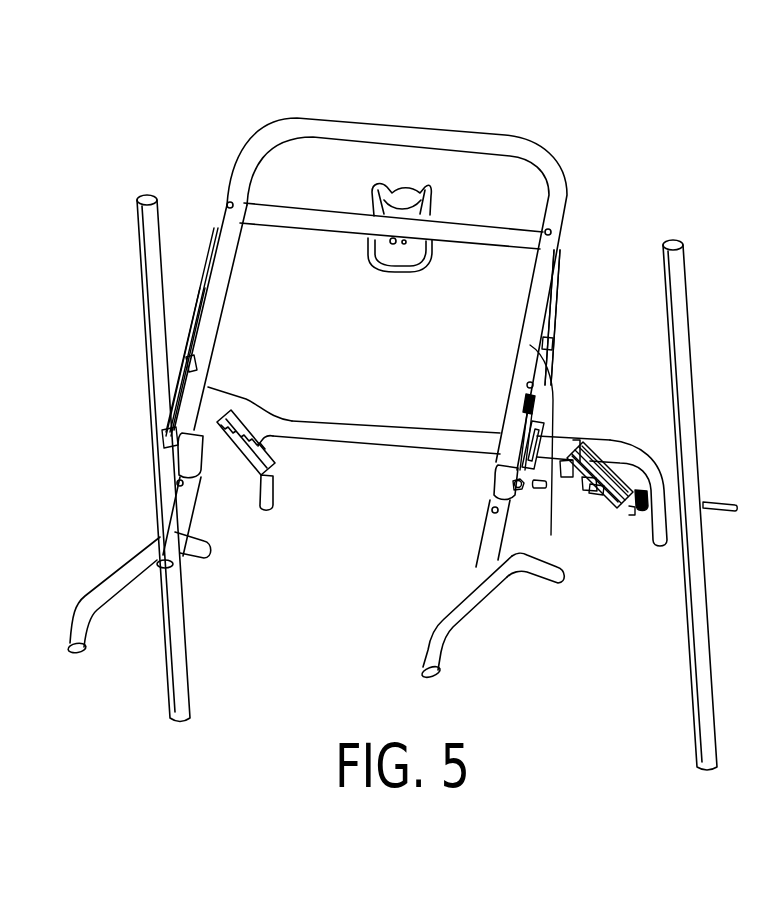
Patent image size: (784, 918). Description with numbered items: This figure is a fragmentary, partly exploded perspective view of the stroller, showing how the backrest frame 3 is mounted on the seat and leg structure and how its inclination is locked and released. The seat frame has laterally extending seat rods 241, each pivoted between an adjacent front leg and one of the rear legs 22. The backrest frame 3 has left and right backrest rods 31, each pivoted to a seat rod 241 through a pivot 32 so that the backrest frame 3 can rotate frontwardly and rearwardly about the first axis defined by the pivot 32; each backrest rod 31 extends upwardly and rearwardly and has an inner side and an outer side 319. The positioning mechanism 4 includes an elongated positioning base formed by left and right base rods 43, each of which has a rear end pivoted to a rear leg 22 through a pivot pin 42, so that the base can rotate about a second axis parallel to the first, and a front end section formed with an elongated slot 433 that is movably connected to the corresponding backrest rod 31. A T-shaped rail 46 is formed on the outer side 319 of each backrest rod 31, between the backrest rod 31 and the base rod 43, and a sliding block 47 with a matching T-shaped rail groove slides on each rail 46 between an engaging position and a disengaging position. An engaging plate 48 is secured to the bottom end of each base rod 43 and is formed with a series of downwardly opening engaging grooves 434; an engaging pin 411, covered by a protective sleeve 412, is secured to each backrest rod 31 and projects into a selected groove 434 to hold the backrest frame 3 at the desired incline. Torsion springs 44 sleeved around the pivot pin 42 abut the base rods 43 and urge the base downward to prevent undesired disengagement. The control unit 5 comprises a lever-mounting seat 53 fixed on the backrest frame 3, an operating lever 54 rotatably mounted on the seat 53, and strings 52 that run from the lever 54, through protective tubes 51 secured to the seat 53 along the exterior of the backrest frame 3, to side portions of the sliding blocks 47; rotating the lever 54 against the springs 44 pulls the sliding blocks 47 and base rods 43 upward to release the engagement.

The backrest frame 3 is at (568, 246).
The control unit 5 is at (458, 214).
The lever-mounting seat 53 is at (406, 194).
The operating lever 54 is at (407, 258).
The protective tubes 51 is at (206, 298).
The strings 52 is at (190, 380).
The backrest rods 31 is at (540, 312).
The outer side 319 is at (542, 342).
The protective sleeves 412 is at (530, 390).
The positioning mechanism 4 is at (252, 423).
The T-shaped rails 46 is at (516, 484).
The engaging pins 411 is at (522, 490).
The seat rods 241 is at (475, 603).
The pivot 32 is at (507, 583).
The base rods 43 is at (604, 491).
The elongated slot 433 is at (598, 447).
The engaging grooves 434 is at (593, 491).
The engaging plates 48 is at (598, 490).
The torsion springs 44 is at (645, 496).
The sliding blocks 47 is at (551, 535).
The pivot pin 42 is at (723, 513).
The rear legs 22 is at (697, 673).